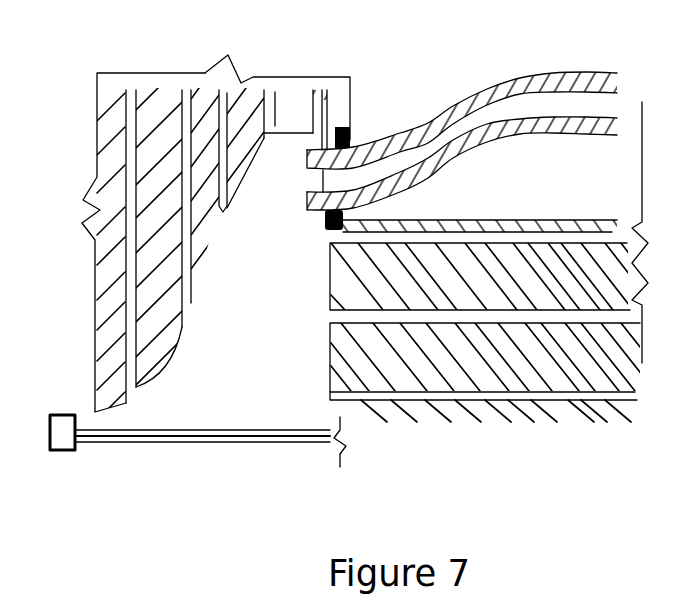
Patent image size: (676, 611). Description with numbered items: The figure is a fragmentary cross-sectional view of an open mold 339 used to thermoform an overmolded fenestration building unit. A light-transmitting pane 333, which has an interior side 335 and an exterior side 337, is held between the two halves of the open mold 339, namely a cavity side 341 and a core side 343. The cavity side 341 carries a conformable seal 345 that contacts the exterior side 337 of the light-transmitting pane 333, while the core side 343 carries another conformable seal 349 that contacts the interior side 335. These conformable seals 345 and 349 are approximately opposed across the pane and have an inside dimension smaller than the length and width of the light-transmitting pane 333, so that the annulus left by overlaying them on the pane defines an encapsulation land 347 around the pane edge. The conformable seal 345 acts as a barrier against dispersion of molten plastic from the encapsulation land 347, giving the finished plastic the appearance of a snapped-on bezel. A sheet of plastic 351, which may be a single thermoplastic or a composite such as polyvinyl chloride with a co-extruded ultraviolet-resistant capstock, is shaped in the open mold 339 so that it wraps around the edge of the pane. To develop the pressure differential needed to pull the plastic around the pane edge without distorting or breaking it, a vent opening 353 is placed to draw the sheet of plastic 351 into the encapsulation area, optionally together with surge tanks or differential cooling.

The light-transmitting pane 333 is at (537, 133).
The interior side 335 is at (520, 146).
The exterior side 337 is at (453, 103).
The open mold 339 is at (176, 345).
The cavity side 341 is at (200, 240).
The core side 343 is at (352, 287).
The conformable seal 345 is at (355, 131).
The encapsulation land 347 is at (320, 147).
The conformable seal 349 is at (345, 216).
The sheet of plastic 351 is at (122, 446).
The vent opening 353 is at (363, 396).